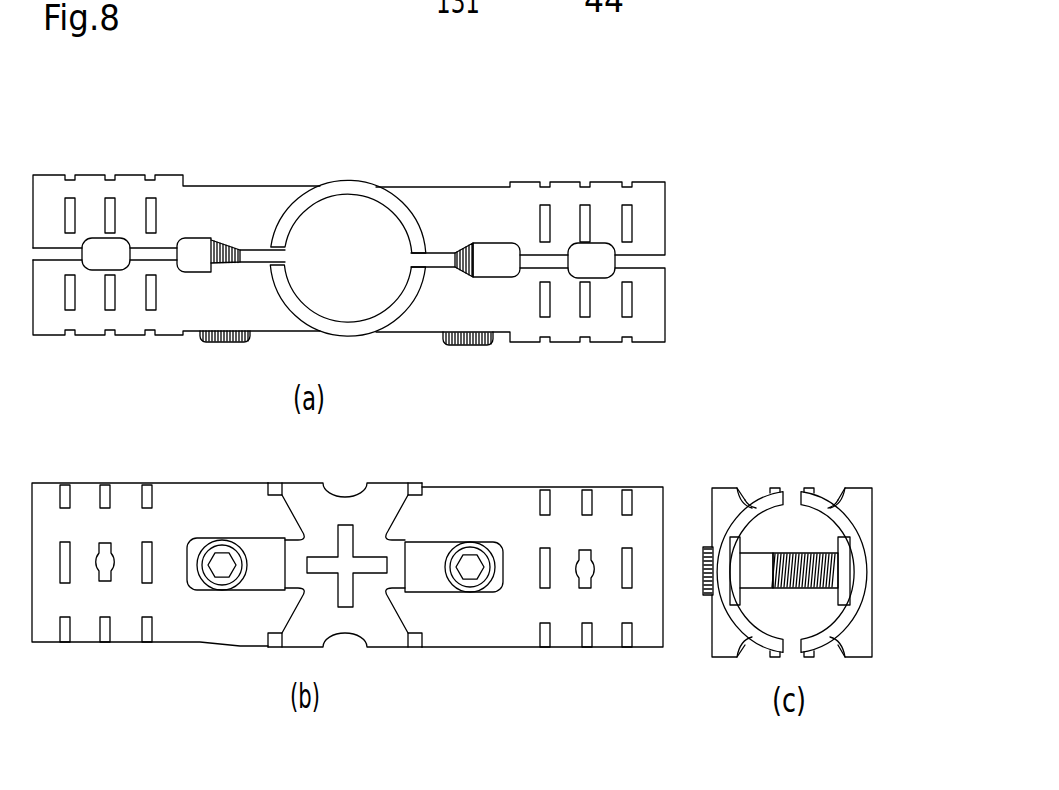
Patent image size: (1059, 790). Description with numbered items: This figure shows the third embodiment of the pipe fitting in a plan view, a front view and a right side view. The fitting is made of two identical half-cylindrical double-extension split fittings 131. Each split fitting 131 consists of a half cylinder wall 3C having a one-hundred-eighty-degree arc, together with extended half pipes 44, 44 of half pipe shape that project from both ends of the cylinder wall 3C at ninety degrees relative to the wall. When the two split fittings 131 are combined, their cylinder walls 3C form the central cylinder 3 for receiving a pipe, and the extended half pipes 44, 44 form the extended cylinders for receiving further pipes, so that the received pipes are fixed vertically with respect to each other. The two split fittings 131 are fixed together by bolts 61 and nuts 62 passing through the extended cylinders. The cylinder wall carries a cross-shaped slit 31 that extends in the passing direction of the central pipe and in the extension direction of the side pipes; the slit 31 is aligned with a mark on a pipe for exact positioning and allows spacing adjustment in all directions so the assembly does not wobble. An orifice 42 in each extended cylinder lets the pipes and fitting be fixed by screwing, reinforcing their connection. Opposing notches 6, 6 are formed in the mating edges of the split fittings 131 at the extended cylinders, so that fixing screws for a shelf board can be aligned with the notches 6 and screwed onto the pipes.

The ½-cylindrical double-extension split fitting 131 is at (696, 212).
The ½ cylinder wall 3C is at (346, 182).
The notch 6 is at (592, 272).
The bolt 61 is at (455, 522).
The nut 62 is at (483, 348).
The cross-shaped slit 31 is at (343, 590).
The orifice 42 is at (594, 573).
The extended half pipe 44 is at (758, 506).
The central cylinder 3 is at (860, 505).